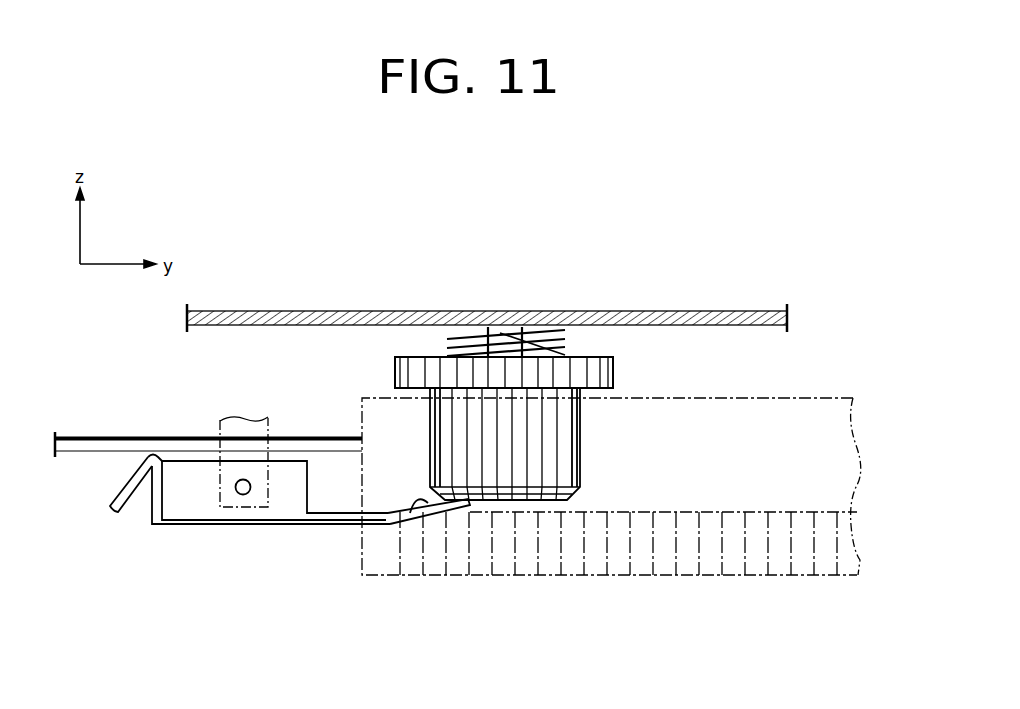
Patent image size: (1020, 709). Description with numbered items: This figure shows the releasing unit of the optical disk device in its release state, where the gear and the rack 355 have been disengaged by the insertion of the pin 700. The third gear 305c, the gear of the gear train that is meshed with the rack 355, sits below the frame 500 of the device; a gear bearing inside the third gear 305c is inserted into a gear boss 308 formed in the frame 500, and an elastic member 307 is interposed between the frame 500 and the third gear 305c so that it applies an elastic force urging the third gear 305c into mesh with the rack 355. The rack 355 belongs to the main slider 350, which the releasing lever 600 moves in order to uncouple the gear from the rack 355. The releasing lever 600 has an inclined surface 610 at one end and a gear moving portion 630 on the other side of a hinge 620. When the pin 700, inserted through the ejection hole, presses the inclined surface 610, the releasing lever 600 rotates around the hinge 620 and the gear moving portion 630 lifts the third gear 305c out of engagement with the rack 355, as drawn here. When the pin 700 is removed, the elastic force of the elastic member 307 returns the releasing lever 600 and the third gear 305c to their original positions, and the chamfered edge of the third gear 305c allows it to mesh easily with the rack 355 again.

The frame 500 is at (357, 310).
The gear boss 308 is at (492, 330).
The elastic member 307 is at (558, 330).
The third gear 305c is at (613, 378).
The main slider 350 is at (853, 398).
The rack 355 is at (793, 555).
The pin 700 is at (90, 447).
The releasing lever 600 is at (206, 543).
The inclined surface 610 is at (115, 510).
The hinge 620 is at (245, 495).
The gear moving portion 630 is at (413, 525).